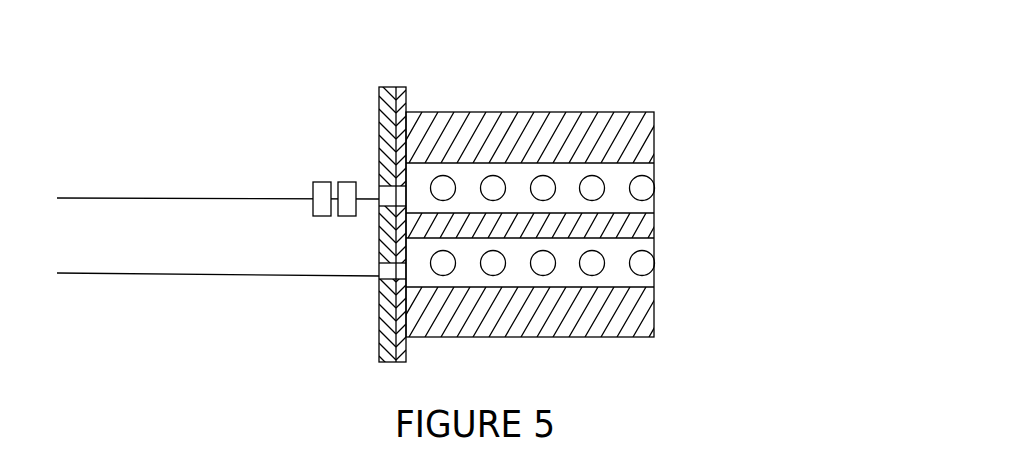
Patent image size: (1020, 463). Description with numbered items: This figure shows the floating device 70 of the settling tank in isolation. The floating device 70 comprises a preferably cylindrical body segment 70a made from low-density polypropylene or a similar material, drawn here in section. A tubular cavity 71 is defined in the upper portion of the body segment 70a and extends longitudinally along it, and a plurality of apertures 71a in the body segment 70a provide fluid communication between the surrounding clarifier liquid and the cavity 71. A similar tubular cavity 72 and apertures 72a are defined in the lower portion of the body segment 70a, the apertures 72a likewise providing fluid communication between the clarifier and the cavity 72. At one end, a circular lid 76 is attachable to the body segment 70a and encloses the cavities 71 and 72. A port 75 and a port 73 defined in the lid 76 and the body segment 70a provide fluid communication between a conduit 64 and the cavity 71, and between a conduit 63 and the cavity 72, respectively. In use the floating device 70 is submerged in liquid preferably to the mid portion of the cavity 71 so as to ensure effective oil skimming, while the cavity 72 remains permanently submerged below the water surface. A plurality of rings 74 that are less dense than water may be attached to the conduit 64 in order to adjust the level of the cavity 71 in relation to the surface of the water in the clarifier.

The conduit 63 is at (278, 276).
The conduit 64 is at (292, 197).
The floating device 70 is at (654, 112).
The body segment 70a is at (654, 135).
The tubular cavity 71 is at (613, 202).
The apertures 71a is at (643, 189).
The tubular cavity 72 is at (640, 268).
The apertures 72a is at (655, 247).
The port 73 is at (390, 274).
The rings 74 is at (312, 215).
The port 75 is at (392, 197).
The circular lid 76 is at (378, 88).